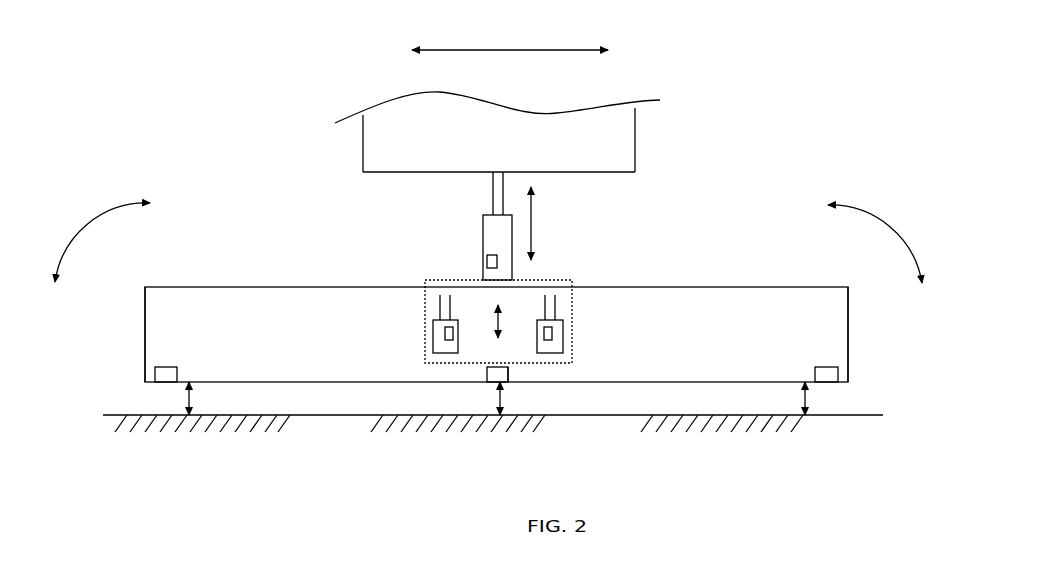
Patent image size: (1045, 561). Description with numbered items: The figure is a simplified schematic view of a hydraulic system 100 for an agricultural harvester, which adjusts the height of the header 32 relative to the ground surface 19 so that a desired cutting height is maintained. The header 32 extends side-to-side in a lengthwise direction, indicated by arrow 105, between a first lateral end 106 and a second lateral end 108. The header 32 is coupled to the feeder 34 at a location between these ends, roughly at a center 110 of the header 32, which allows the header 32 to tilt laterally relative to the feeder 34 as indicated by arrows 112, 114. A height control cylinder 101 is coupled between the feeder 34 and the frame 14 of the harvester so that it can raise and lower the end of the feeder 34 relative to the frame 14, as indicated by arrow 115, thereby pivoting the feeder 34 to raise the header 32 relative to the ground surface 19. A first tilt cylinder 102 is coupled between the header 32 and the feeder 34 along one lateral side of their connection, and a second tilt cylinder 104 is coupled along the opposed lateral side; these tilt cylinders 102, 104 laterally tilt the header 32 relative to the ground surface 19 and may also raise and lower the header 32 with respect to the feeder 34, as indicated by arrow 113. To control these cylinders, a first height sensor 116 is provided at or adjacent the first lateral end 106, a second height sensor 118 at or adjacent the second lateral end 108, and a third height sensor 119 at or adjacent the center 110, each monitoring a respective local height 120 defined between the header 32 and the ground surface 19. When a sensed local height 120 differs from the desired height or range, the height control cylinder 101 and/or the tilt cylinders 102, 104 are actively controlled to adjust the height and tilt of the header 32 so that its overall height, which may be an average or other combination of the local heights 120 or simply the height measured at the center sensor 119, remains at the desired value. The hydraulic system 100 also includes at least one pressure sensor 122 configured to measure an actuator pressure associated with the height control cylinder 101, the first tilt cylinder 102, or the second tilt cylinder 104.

The frame 14 is at (363, 128).
The ground surface 19 is at (137, 415).
The header 32 is at (302, 287).
The feeder 34 is at (565, 282).
The hydraulic system 100 is at (385, 252).
The height control cylinder 101 is at (483, 240).
The first tilt cylinder 102 is at (432, 336).
The second tilt cylinder 104 is at (565, 336).
The arrow indicating lengthwise direction 105 is at (520, 50).
The first lateral end 106 is at (145, 316).
The second lateral end 108 is at (848, 313).
The center of the header 110 is at (484, 386).
The arrow indicating lateral tilt 112 is at (88, 218).
The arrow indicating raising and lowering of header 113 is at (496, 319).
The arrow indicating lateral tilt 114 is at (888, 222).
The arrow indicating raising and lowering of feeder 115 is at (532, 222).
The first height sensor 116 is at (167, 367).
The second height sensor 118 is at (825, 367).
The third height sensor 119 is at (508, 371).
The local height 120 is at (191, 398).
The pressure sensor 122 is at (487, 262).